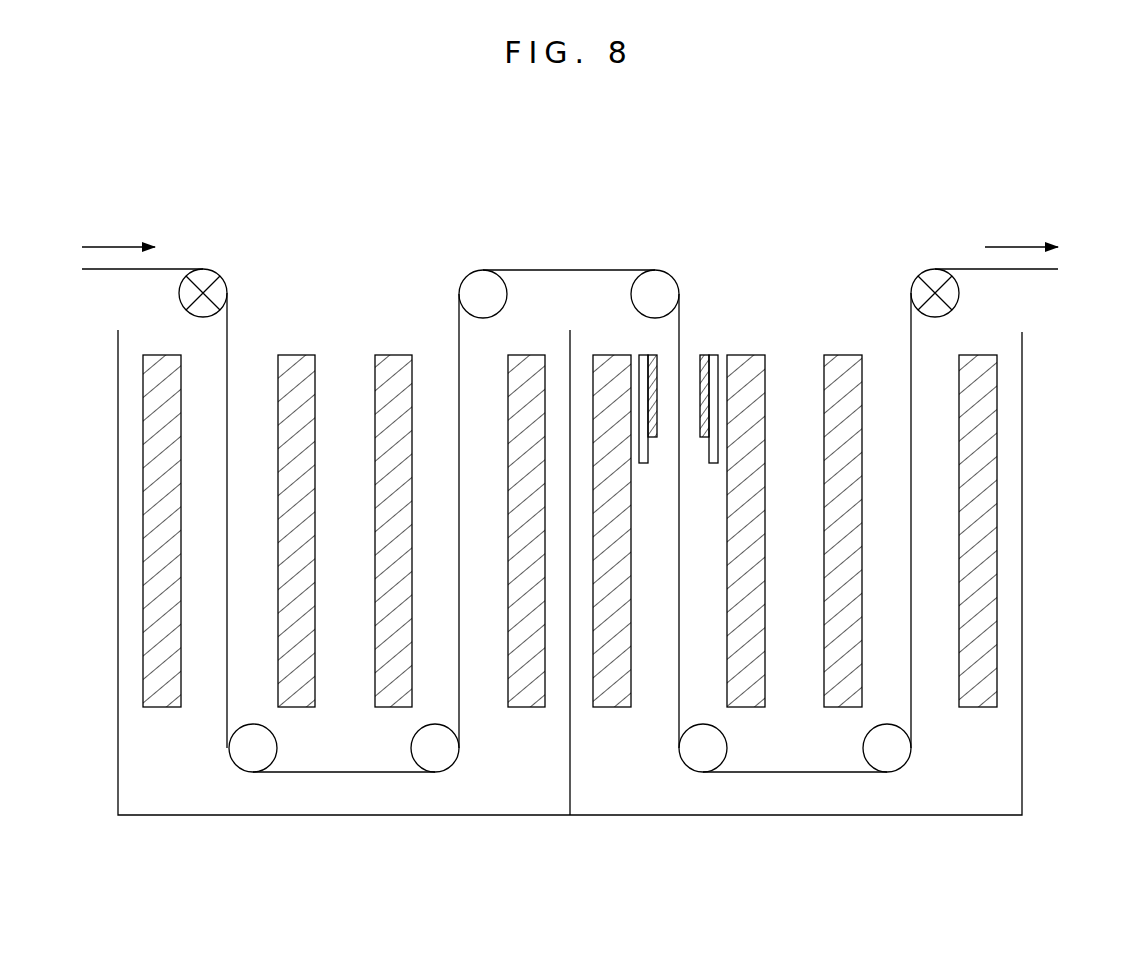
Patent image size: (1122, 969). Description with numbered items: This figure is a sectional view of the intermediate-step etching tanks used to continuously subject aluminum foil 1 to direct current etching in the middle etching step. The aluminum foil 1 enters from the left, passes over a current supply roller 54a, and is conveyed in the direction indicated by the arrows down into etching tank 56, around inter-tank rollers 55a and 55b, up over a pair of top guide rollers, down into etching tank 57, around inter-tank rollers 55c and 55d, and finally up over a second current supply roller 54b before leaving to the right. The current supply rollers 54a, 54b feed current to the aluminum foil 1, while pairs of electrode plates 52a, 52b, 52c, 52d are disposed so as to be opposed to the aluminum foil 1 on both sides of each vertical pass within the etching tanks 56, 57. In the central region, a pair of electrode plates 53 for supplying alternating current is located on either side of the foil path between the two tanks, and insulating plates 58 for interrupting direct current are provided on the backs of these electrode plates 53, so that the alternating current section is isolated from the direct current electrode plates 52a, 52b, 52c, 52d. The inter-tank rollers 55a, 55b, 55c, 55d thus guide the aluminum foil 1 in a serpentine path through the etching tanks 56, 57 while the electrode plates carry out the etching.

The aluminum foil 1 is at (92, 272).
The pair of electrode plates 52a is at (295, 547).
The pair of electrode plates 52b is at (400, 665).
The pair of electrode plates 52c is at (742, 667).
The pair of electrode plates 52d is at (857, 660).
The pair of electrode plates for supplying alternating current 53 is at (653, 362).
The current supply roller 54a is at (203, 277).
The current supply roller 54b is at (935, 277).
The inter-tank roller 55a is at (245, 757).
The inter-tank roller 55b is at (437, 757).
The inter-tank roller 55c is at (707, 760).
The inter-tank roller 55d is at (887, 758).
The etching tank 56 is at (118, 381).
The etching tank 57 is at (1022, 425).
The insulating plate 58 is at (645, 362).